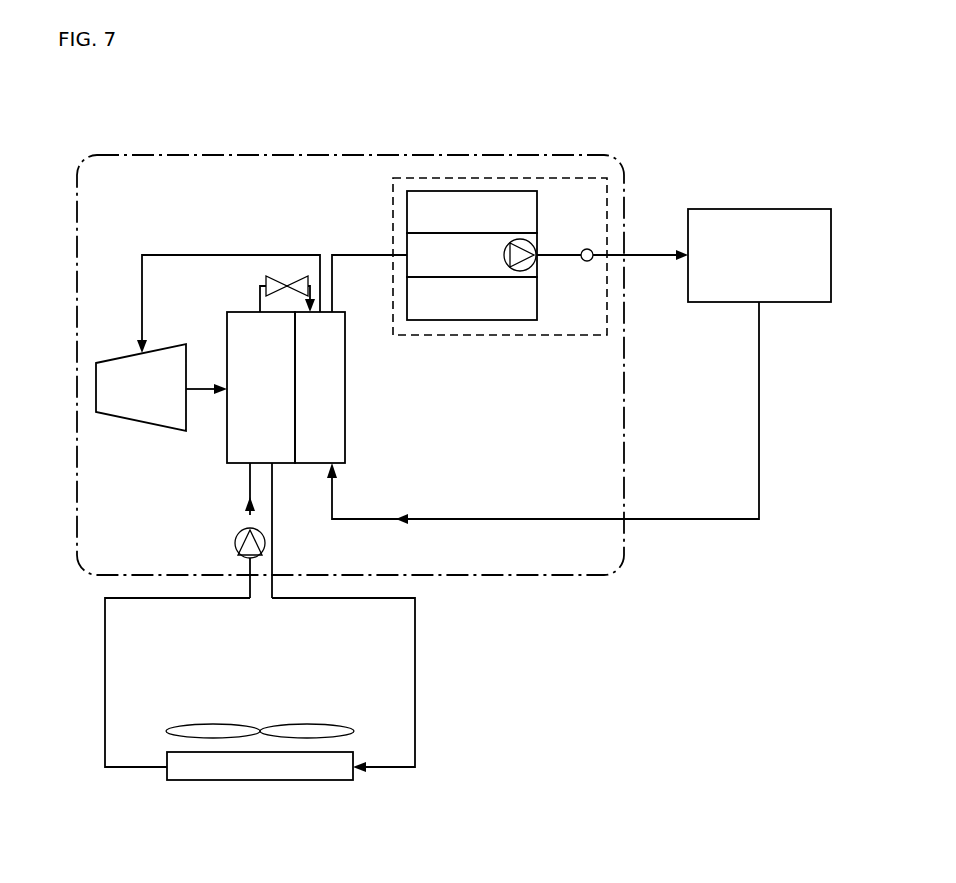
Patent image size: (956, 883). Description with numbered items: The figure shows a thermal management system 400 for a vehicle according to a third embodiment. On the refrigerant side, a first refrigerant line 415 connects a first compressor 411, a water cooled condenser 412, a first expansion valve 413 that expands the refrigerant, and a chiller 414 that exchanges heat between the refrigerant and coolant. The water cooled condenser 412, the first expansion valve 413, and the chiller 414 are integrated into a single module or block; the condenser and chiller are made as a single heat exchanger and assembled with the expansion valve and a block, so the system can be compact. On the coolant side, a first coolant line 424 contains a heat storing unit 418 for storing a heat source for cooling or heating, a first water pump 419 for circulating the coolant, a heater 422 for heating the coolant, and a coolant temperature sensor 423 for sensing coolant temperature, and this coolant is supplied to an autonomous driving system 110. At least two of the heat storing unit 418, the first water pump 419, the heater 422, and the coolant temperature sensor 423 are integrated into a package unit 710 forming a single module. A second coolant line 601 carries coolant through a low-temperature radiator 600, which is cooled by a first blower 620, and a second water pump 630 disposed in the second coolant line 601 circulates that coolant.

The thermal management module 400 is at (350, 155).
The package unit 710 is at (513, 178).
The heat storing unit 418 is at (473, 191).
The first water pump 419 is at (537, 258).
The heater 422 is at (475, 320).
The coolant temperature sensor 423 is at (590, 249).
The autonomous driving system 110 is at (760, 209).
The first coolant line 424 is at (759, 410).
The first refrigerant line 415 is at (165, 253).
The first expansion valve 413 is at (280, 278).
The water cooled condenser 412 is at (240, 312).
The chiller 414 is at (345, 417).
The first compressor 411 is at (142, 427).
The second water pump 630 is at (235, 543).
The second coolant line 601 is at (415, 685).
The first blower 620 is at (215, 725).
The low-temperature radiator 600 is at (318, 780).